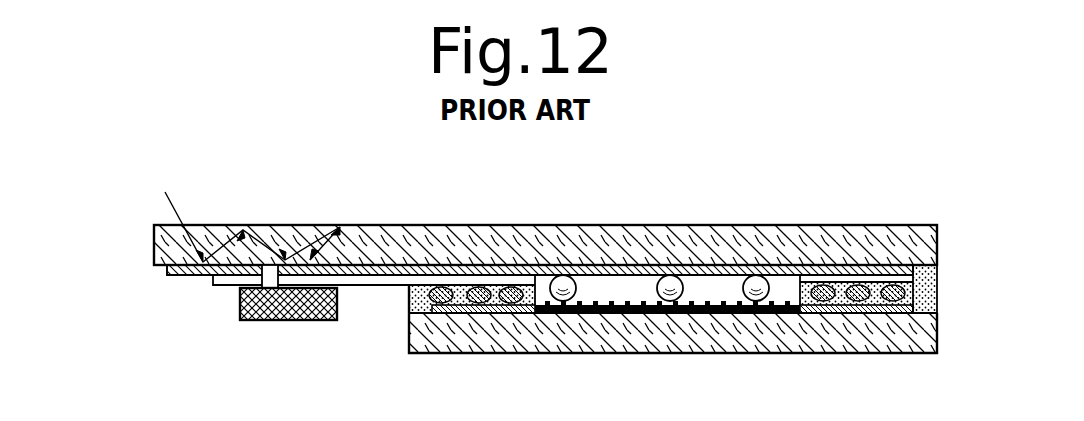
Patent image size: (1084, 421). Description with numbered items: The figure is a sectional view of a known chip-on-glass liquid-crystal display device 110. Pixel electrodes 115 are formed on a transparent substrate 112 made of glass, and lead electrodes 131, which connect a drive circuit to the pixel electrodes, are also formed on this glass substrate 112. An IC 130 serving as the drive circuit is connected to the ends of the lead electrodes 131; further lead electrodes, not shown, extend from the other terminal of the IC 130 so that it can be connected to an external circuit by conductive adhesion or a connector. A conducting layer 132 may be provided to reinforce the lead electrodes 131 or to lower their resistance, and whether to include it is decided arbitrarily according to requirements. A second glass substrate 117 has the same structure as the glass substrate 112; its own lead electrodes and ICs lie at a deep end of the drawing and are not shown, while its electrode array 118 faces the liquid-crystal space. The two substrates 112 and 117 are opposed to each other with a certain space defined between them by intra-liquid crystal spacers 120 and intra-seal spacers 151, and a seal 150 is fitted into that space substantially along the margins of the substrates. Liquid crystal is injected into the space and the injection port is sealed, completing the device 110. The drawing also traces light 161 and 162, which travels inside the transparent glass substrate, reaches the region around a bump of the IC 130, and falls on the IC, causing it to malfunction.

The liquid-crystal display device 110 is at (817, 192).
The transparent substrate 112 is at (893, 226).
The pixel electrodes 115 is at (718, 274).
The glass substrate 117 is at (627, 322).
The pixel electrode array 118 is at (725, 306).
The intra-liquid crystal spacers 120 is at (560, 278).
The IC 130 is at (260, 321).
The lead electrodes 131 is at (381, 270).
The conducting layer 132 is at (353, 278).
The seal 150 is at (422, 333).
The intra-seal spacers 151 is at (480, 290).
The light 161 is at (185, 252).
The light 162 is at (380, 288).